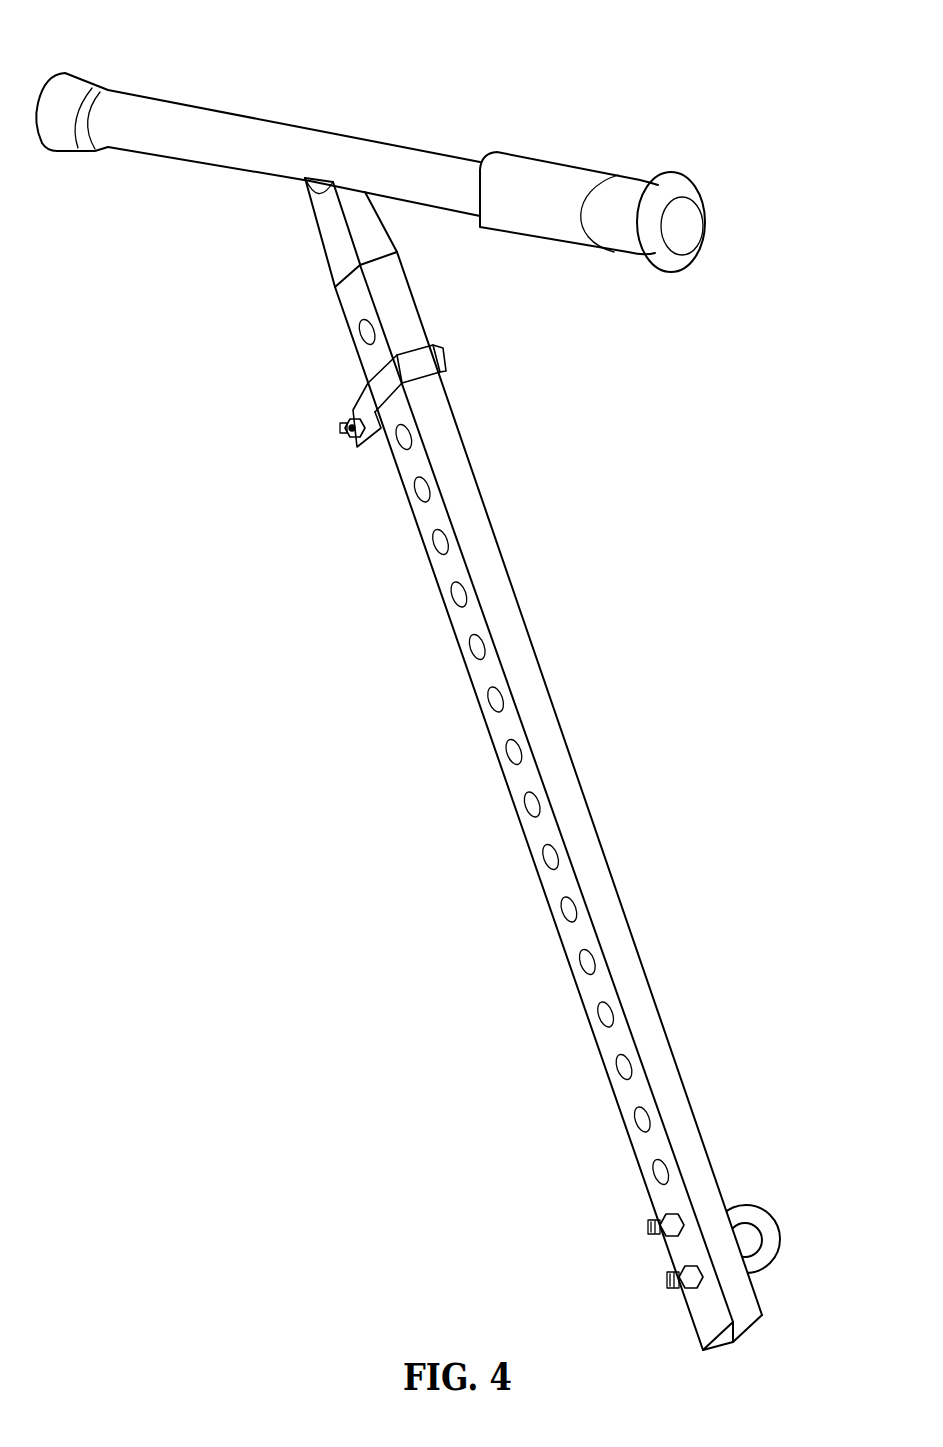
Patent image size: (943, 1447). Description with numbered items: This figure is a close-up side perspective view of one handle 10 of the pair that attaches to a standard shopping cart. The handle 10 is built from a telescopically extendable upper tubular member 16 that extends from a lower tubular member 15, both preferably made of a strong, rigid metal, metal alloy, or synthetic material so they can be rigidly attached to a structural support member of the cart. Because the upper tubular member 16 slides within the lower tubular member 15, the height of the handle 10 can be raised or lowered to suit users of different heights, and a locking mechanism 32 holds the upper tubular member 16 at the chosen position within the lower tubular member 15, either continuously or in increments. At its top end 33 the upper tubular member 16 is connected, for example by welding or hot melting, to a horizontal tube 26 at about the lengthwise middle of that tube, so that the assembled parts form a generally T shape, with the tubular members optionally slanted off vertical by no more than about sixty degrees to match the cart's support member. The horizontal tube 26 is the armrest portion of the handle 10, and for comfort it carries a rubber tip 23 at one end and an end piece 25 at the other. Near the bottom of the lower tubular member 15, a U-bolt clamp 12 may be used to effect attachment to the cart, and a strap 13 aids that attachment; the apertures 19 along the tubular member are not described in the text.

The handle 10 is at (760, 68).
The U-bolt clamp 12 is at (773, 1243).
The strap 13 is at (375, 390).
The lower tubular member 15 is at (498, 730).
The upper tubular member 16 is at (334, 247).
The holes 19 is at (600, 1016).
The rubber tip 23 is at (76, 76).
The end piece 25 is at (570, 164).
The horizontal tube 26 is at (316, 130).
The locking mechanism 32 is at (650, 1172).
The top end 33 is at (319, 192).